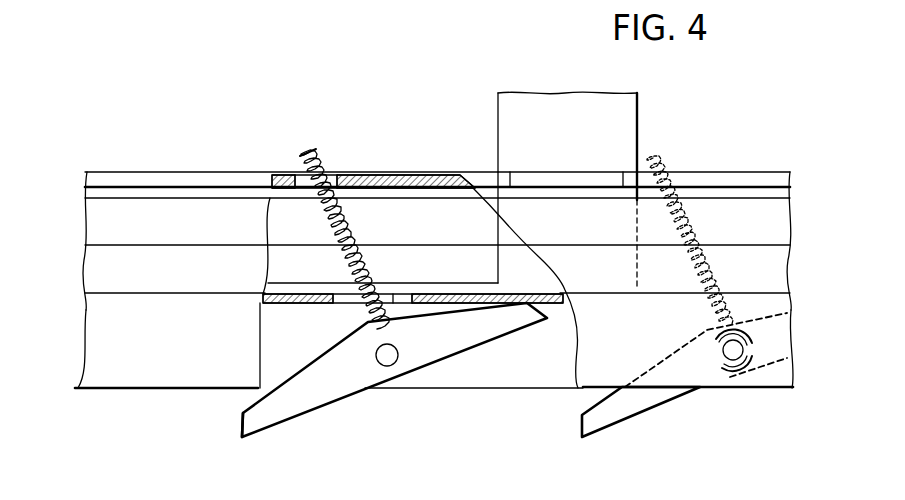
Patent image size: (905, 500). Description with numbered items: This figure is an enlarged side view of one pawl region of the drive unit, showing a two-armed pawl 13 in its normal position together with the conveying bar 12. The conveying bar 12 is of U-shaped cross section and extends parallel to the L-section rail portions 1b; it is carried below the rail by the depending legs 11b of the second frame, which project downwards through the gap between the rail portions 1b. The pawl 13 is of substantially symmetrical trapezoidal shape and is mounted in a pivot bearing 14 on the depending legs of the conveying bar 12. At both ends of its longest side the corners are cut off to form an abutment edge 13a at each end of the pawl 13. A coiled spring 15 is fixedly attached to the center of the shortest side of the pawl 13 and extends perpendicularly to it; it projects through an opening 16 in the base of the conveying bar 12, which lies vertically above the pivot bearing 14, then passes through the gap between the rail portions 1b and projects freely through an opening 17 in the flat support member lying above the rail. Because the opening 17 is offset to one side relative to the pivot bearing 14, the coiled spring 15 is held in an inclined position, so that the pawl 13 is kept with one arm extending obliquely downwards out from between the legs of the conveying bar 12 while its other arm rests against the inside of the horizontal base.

The L-section rail portions 1b is at (145, 220).
The depending leg of second frame 11b is at (603, 130).
The conveying bar 12 is at (127, 338).
The two-armed pawl 13 is at (333, 378).
The abutment edge 13a is at (242, 422).
The pivot bearing 14 is at (387, 355).
The coiled spring 15 is at (300, 150).
The opening in base of conveying bar 16 is at (393, 297).
The opening in support member 17 is at (332, 180).